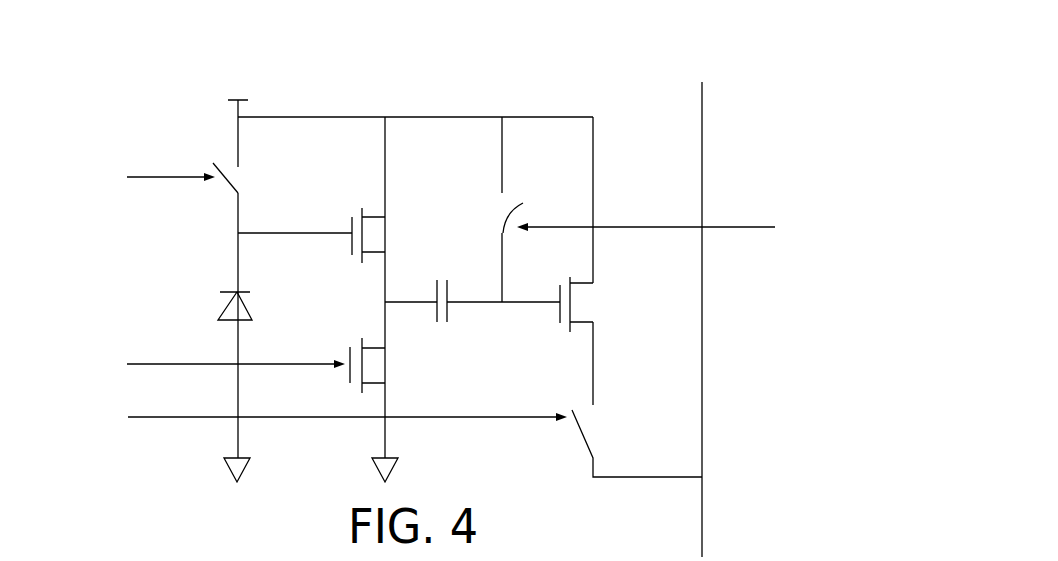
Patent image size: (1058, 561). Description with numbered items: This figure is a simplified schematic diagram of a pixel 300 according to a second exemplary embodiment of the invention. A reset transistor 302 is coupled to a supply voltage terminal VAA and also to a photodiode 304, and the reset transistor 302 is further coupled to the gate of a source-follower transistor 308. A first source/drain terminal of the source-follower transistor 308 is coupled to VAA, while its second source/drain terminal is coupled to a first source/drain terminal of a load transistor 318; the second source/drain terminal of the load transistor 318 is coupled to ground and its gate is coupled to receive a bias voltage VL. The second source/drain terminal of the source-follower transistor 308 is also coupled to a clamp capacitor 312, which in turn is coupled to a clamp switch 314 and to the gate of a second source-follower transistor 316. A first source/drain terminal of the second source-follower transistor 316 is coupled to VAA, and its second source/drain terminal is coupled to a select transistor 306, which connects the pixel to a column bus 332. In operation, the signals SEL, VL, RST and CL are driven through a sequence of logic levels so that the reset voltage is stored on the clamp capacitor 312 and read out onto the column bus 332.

The pixel 300 is at (495, 57).
The reset transistor 302 is at (254, 172).
The photodiode 304 is at (222, 310).
The select transistor 306 is at (612, 409).
The source-follower transistor 308 is at (407, 211).
The clamp capacitor 312 is at (442, 266).
The clamp switch 314 is at (520, 193).
The second source-follower transistor 316 is at (614, 285).
The load transistor 318 is at (405, 390).
The column bus 332 is at (702, 175).